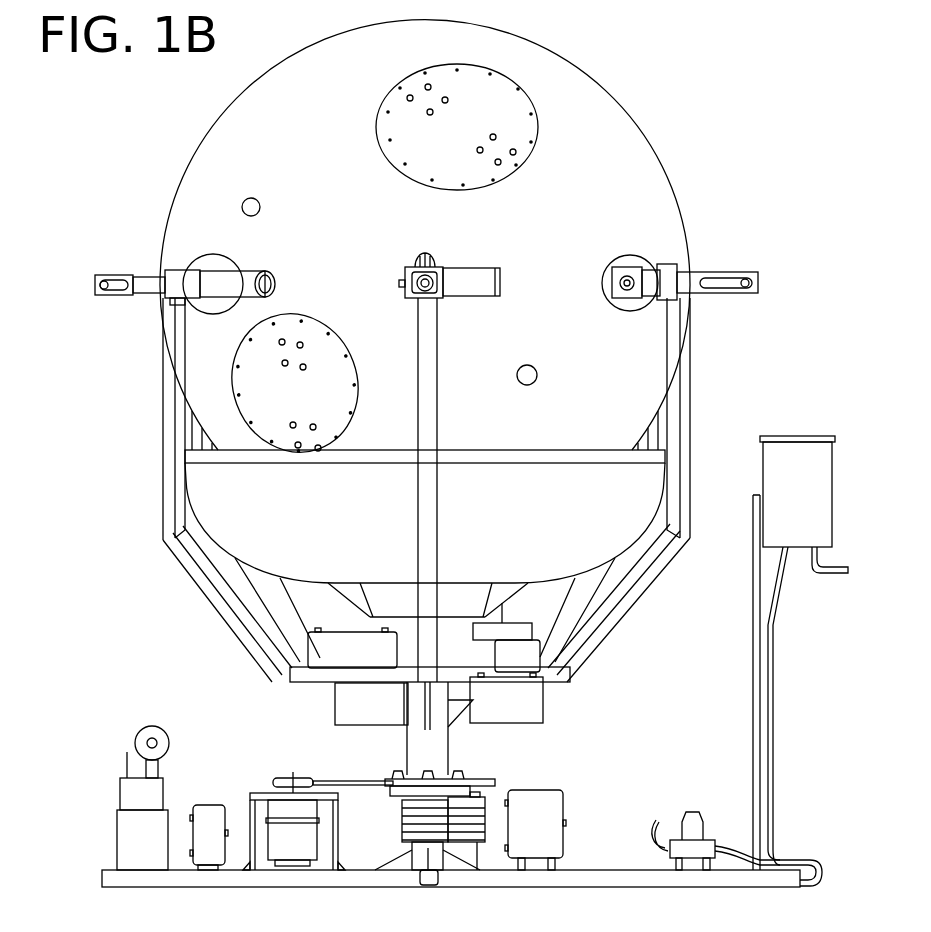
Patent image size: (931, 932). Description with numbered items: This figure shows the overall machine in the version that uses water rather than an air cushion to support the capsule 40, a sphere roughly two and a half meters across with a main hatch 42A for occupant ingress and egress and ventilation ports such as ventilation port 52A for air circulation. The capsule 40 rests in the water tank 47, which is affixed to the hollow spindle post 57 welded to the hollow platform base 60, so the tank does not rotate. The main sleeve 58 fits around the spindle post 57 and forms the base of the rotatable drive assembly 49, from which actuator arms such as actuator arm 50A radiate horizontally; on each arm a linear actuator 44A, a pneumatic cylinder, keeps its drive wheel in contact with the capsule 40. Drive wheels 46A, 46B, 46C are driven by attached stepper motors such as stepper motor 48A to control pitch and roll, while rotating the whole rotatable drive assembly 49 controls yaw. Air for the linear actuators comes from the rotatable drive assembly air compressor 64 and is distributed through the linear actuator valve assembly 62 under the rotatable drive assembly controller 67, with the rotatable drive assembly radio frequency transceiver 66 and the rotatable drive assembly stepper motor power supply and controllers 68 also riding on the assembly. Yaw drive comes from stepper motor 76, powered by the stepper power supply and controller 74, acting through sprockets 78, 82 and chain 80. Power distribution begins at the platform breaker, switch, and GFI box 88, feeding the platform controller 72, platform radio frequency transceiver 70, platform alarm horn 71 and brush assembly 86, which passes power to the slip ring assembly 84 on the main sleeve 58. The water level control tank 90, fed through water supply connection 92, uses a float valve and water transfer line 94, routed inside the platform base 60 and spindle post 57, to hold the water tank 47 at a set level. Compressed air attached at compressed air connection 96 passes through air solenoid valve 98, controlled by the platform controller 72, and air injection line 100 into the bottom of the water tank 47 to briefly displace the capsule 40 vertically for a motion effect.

The capsule 40 is at (311, 108).
The main hatch 42A is at (530, 165).
The linear actuator 44A is at (135, 272).
The drive wheel 46A is at (206, 250).
The drive wheel 46B is at (426, 250).
The drive wheel 46C is at (626, 256).
The water tank 47 is at (318, 515).
The stepper motor 48A is at (252, 262).
The rotatable drive assembly 49 is at (692, 373).
The actuator arm 50A is at (163, 390).
The ventilation port 52A is at (250, 197).
The spindle post 57 is at (408, 865).
The main sleeve 58 is at (448, 755).
The platform base 60 is at (590, 868).
The linear actuator valve assembly 62 is at (318, 632).
The rotatable drive assembly air compressor 64 is at (335, 710).
The rotatable drive assembly radio frequency transceiver 66 is at (540, 658).
The rotatable drive assembly controller 67 is at (535, 627).
The rotatable drive assembly stepper motor power supply and controllers 68 is at (545, 703).
The platform radio frequency transceiver 70 is at (120, 795).
The platform alarm horn 71 is at (135, 740).
The platform controller 72 is at (117, 840).
The stepper power supply and controller 74 is at (205, 805).
The stepper motor 76 is at (293, 866).
The sprocket 78 is at (285, 778).
The chain 80 is at (330, 780).
The sprocket 82 is at (356, 780).
The slip ring assembly 84 is at (405, 803).
The brush assembly 86 is at (485, 805).
The platform breaker, switch, and GFI box 88 is at (565, 800).
The water level control tank 90 is at (832, 478).
The water supply connection 92 is at (850, 575).
The water transfer line 94 is at (774, 660).
The compressed air connection 96 is at (656, 818).
The air solenoid valve 98 is at (702, 820).
The air injection line 100 is at (740, 850).